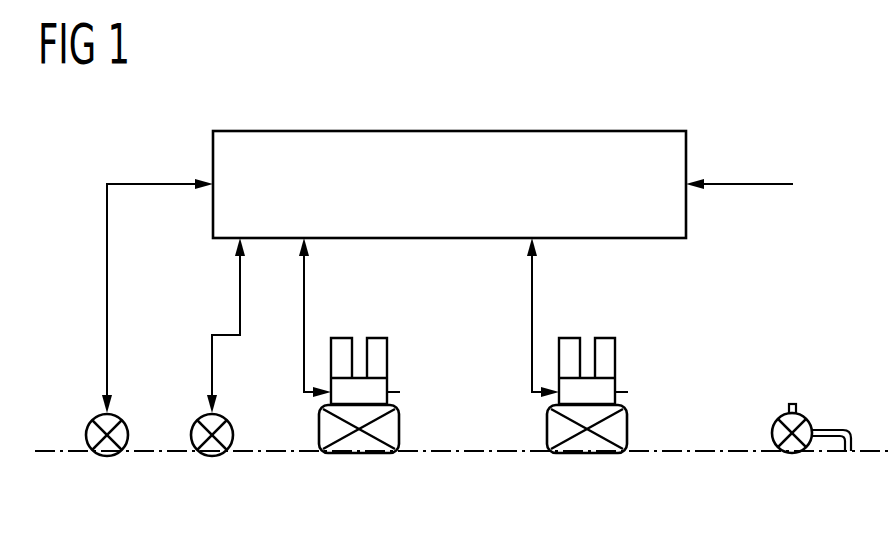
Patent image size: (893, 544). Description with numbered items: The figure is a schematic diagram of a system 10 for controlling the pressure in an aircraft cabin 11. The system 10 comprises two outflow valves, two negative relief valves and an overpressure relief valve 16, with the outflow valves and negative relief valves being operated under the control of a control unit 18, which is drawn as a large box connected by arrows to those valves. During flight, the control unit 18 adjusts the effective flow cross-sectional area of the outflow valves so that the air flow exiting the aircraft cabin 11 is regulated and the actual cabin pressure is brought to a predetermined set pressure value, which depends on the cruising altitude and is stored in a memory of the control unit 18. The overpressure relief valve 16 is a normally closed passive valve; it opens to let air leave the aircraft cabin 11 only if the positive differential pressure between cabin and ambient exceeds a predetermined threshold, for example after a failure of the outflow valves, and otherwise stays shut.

The system for controlling the pressure in an aircraft cabin 10 is at (741, 92).
The aircraft cabin 11 is at (861, 281).
The overpressure relief valve 16 is at (793, 454).
The control unit 18 is at (448, 130).